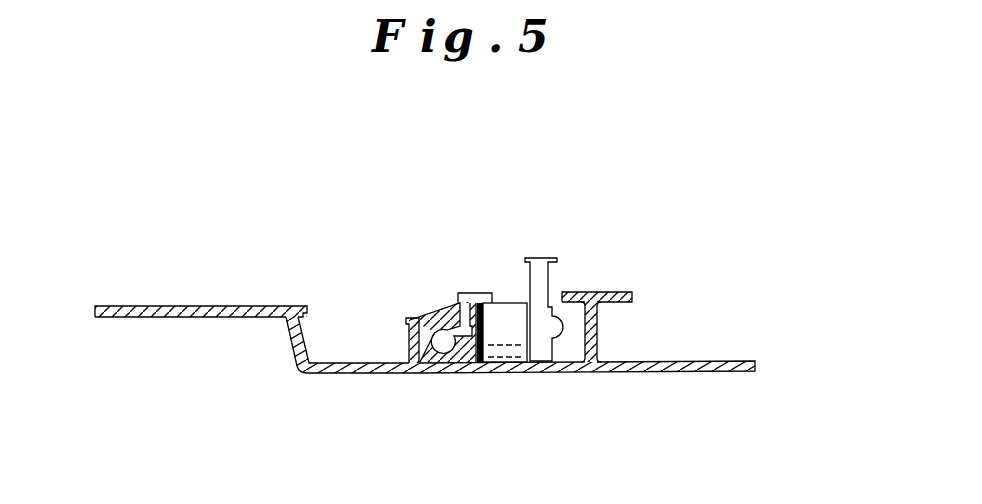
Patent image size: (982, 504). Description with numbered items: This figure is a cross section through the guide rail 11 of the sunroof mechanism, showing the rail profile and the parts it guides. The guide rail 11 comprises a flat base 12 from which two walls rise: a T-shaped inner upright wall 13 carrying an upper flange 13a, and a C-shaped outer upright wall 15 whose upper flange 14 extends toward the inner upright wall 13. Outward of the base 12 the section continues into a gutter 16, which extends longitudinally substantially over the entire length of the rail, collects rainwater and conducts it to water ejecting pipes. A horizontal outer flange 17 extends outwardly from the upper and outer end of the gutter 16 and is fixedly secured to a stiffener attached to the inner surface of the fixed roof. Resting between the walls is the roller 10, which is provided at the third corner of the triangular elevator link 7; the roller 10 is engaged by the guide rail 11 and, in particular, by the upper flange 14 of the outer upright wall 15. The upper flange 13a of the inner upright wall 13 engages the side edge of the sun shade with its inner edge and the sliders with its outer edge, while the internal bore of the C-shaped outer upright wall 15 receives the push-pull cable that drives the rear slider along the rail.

The elevator link 7 is at (557, 272).
The roller 10 is at (508, 302).
The guide rail 11 is at (421, 312).
The flat base 12 is at (608, 373).
The inner upright wall 13 is at (600, 327).
The upper flange 13a is at (593, 293).
The upper flange 14 is at (481, 292).
The outer upright wall 15 is at (418, 366).
The gutter 16 is at (349, 358).
The horizontal outer flange 17 is at (217, 305).